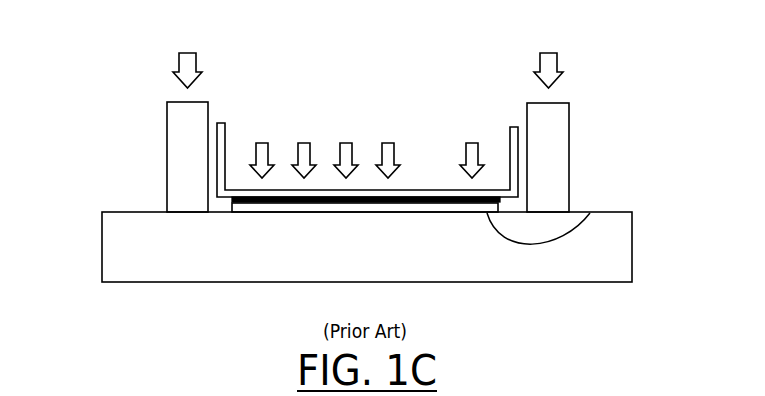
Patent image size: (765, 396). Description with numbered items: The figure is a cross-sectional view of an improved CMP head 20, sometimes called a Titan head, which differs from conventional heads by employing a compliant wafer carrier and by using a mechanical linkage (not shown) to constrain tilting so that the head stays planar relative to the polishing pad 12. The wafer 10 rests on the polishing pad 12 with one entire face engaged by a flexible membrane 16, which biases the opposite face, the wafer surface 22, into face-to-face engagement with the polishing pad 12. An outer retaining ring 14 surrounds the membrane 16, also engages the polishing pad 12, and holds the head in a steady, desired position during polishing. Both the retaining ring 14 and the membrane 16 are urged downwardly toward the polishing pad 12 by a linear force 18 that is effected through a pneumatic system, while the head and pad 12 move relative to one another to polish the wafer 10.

The wafer 10 is at (232, 210).
The polishing pad 12 is at (110, 237).
The outer retaining ring 14 is at (167, 140).
The flexible membrane 16 is at (423, 188).
The linear force 18 is at (198, 55).
The improved CMP head 20 is at (442, 50).
The wafer surface 22 is at (590, 213).